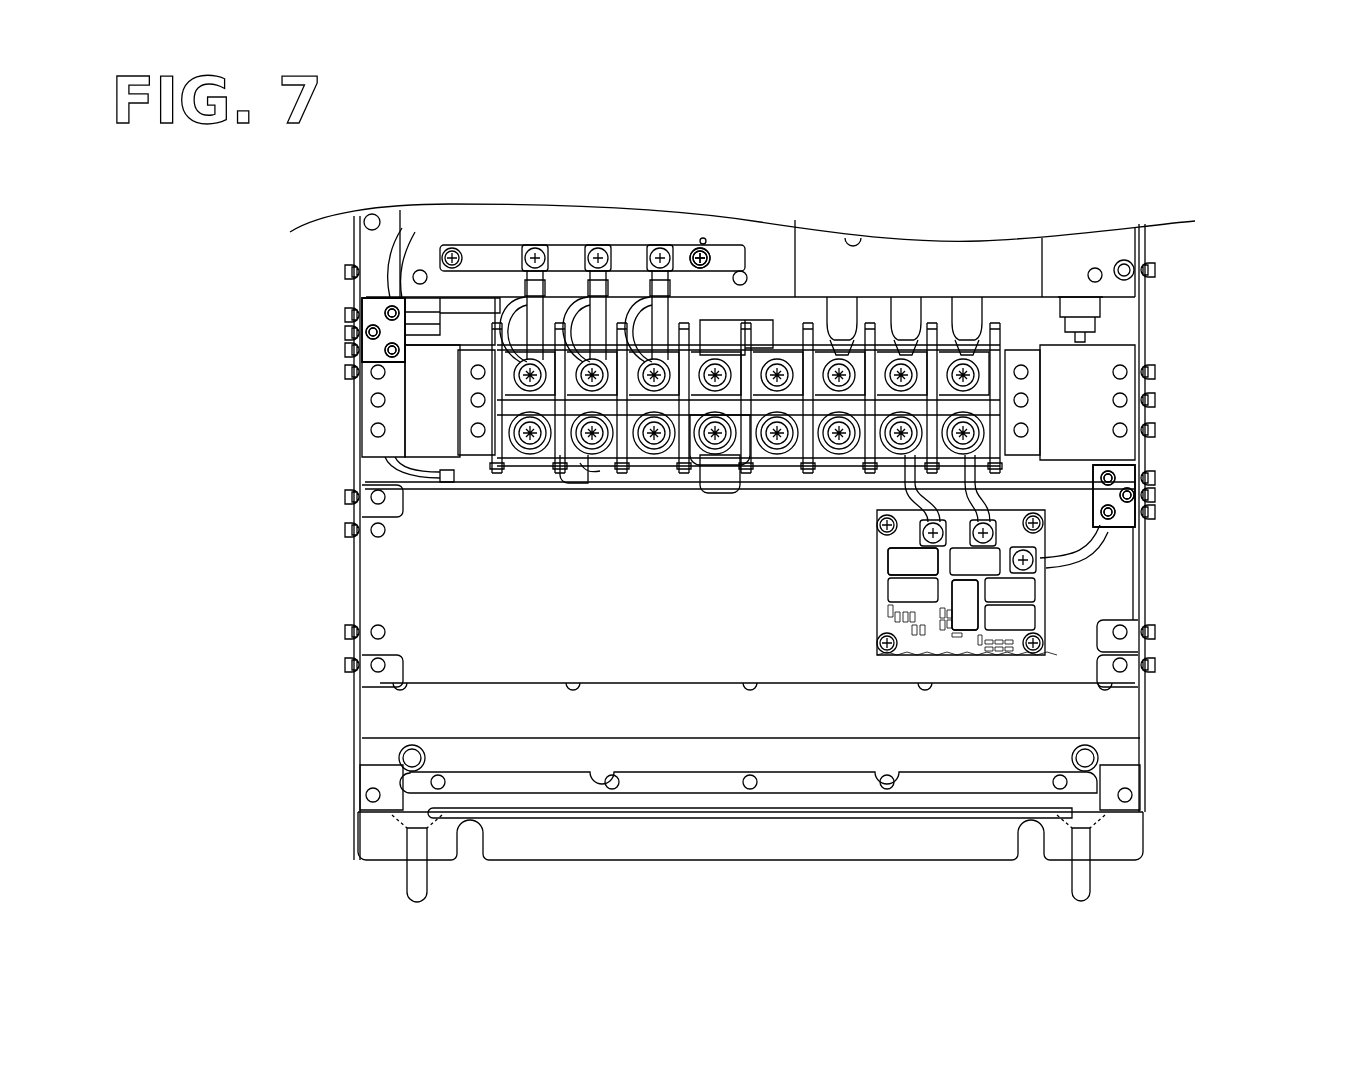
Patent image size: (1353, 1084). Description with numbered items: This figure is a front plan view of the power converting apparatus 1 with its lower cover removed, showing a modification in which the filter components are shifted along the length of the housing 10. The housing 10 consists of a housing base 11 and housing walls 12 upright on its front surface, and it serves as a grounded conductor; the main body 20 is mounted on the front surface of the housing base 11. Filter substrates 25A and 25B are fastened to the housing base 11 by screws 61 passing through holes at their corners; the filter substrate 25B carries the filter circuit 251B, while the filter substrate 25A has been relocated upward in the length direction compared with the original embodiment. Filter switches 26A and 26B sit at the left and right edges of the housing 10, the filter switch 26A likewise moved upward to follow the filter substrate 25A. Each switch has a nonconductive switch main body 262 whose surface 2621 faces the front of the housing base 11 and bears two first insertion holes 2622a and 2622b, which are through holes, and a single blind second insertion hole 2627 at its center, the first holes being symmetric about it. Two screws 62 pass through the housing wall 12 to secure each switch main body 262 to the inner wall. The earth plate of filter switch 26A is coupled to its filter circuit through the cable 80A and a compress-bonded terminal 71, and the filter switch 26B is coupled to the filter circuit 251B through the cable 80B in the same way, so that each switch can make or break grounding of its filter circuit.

The power converting apparatus 1 is at (1172, 168).
The housing 10 is at (1150, 312).
The housing base 11 is at (370, 712).
The housing wall 12 is at (1140, 336).
The main body 20 is at (762, 720).
The filter substrate 25A is at (566, 247).
The filter substrate 25B is at (970, 647).
The filter circuit 251B is at (927, 640).
The filter switch 26A is at (352, 308).
The filter switch 26B is at (1145, 472).
The screw 61 is at (698, 250).
The screw 62 is at (350, 341).
The compress-bonded terminal 71 is at (1043, 570).
The cable 80A is at (397, 258).
The cable 80B is at (1100, 530).
The switch main body 262 is at (378, 312).
The surface 2621 is at (400, 355).
The first insertion hole 2622a is at (390, 310).
The first insertion hole 2622b is at (392, 355).
The second insertion hole 2627 is at (373, 338).